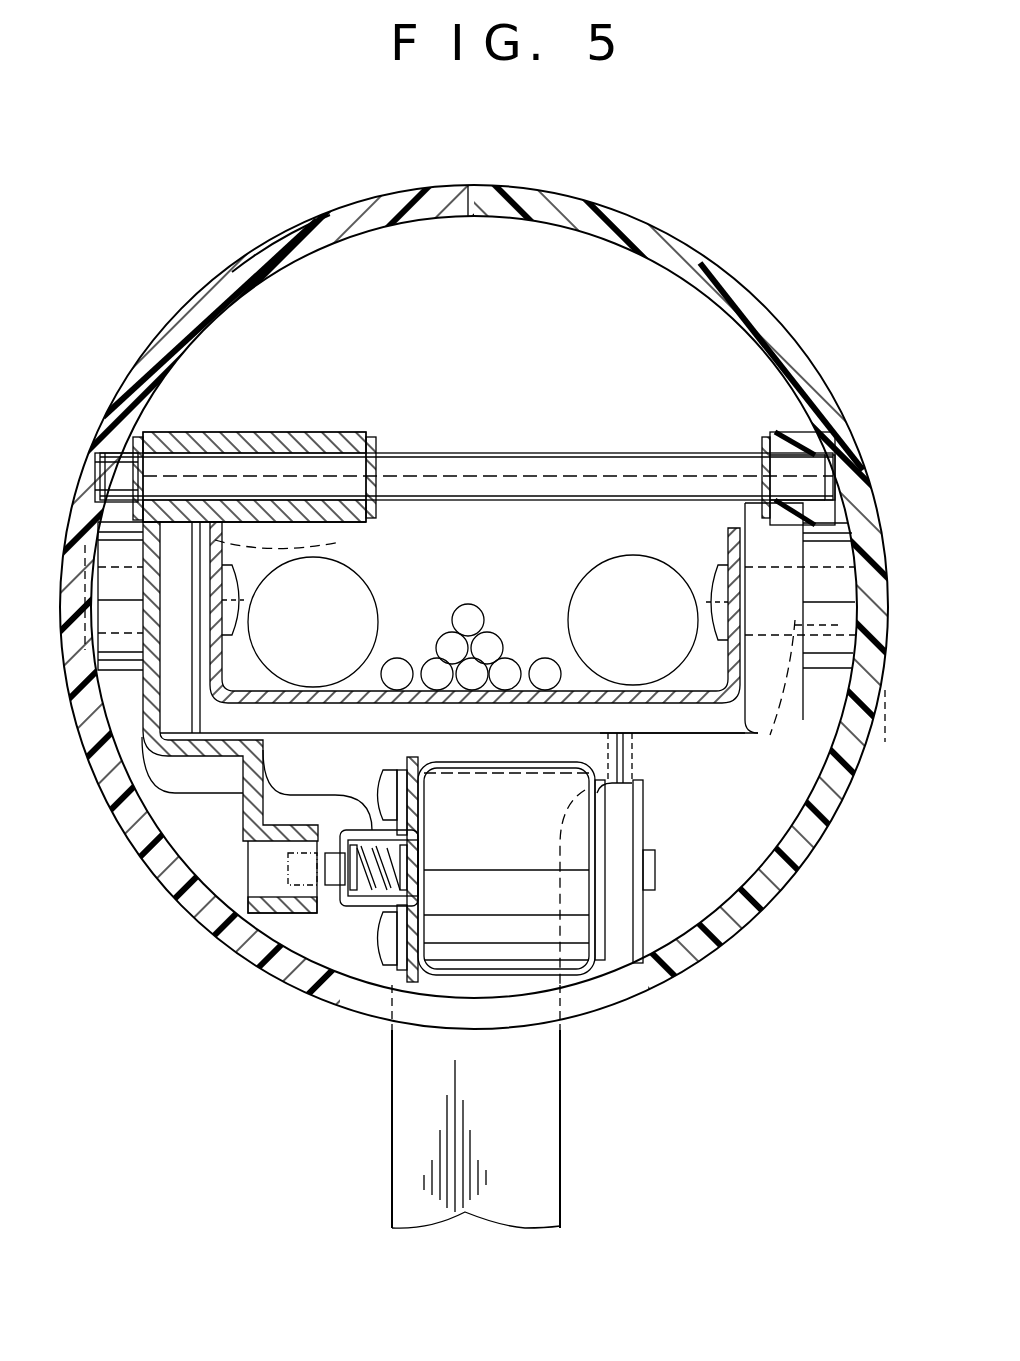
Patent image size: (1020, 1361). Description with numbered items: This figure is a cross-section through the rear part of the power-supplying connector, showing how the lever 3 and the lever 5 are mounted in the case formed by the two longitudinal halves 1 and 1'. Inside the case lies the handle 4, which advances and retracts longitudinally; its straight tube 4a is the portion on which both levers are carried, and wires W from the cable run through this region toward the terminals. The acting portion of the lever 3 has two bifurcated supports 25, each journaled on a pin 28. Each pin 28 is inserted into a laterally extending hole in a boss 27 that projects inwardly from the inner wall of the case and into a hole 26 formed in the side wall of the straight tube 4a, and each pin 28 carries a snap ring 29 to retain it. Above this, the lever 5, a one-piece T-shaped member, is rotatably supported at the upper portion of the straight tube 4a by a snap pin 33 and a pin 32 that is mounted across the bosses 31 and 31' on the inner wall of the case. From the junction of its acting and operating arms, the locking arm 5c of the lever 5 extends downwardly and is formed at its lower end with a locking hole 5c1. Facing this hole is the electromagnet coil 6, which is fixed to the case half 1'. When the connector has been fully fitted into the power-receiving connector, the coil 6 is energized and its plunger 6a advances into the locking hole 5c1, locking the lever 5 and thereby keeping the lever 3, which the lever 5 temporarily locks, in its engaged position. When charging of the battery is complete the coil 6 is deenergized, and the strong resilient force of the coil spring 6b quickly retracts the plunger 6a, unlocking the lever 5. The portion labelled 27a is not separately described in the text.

The case half 1 is at (474, 607).
The case half 1' is at (256, 239).
The lever 3 is at (560, 1158).
The handle 4 is at (237, 707).
The straight tube 4a is at (650, 703).
The lever 5 is at (255, 430).
The locking arm 5c is at (150, 718).
The locking hole 5c1 is at (262, 884).
The electromagnet coil 6 is at (588, 980).
The plunger 6a is at (333, 878).
The coil spring 6b is at (382, 887).
The bifurcated support 25 is at (883, 450).
The hole 26 is at (714, 566).
The boss 27 is at (120, 655).
The side block portion 27a is at (791, 699).
The pin 28 is at (884, 742).
The snap ring 29 is at (706, 690).
The boss 31 is at (100, 433).
The boss 31' is at (826, 436).
The pin 32 is at (612, 468).
The snap pin 33 is at (372, 446).
The wires W is at (399, 667).